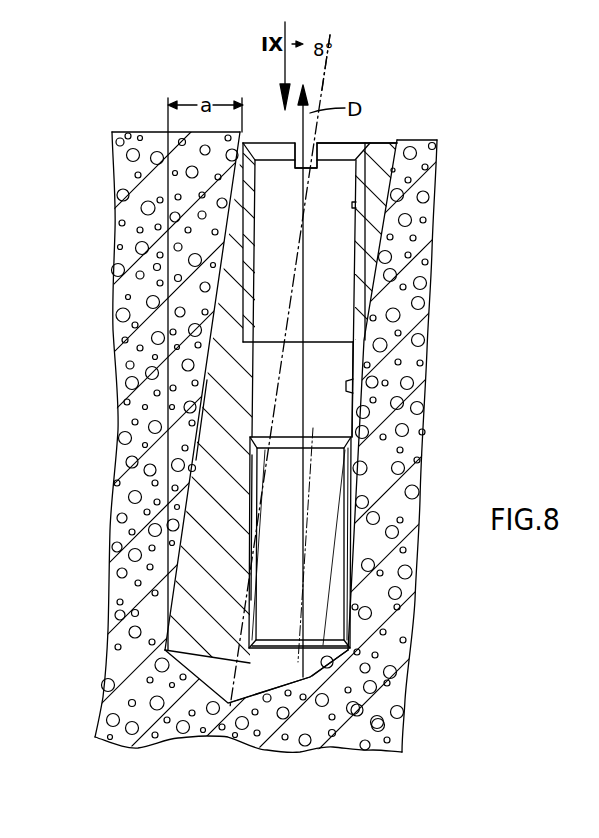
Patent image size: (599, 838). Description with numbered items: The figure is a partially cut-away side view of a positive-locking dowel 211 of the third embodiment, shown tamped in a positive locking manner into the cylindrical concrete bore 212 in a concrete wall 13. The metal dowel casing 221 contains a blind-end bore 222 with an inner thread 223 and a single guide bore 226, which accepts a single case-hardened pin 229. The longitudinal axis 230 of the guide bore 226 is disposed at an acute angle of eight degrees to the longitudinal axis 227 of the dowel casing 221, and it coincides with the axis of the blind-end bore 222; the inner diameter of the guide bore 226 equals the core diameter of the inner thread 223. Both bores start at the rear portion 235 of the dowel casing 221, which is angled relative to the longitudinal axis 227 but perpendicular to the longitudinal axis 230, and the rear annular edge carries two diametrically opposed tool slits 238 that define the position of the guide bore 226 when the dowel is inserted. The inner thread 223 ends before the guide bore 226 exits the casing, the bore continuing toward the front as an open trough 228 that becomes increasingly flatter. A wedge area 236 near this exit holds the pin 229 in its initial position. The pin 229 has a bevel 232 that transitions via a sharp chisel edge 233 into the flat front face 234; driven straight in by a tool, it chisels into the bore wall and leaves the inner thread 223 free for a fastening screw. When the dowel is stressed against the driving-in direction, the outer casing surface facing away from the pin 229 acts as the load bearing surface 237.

The concrete wall 13 is at (123, 172).
The dowel 211 is at (202, 302).
The dowel casing 221 is at (226, 237).
The concrete bore 212 is at (192, 472).
The load bearing surface 237 is at (212, 420).
The inner thread 223 is at (362, 241).
The blind-end bore 222 is at (356, 208).
The guide bore 226 is at (354, 394).
The wedge area 236 is at (355, 418).
The longitudinal axis of the guide bore 230 is at (307, 323).
The pin 229 is at (347, 598).
The open trough 228 is at (250, 612).
The bevel 232 is at (351, 645).
The chisel edge 233 is at (348, 656).
The flat front face 234 is at (350, 665).
The tool slits 238 is at (302, 143).
The rear portion 235 is at (348, 141).
The longitudinal axis of the dowel casing 227 is at (326, 70).